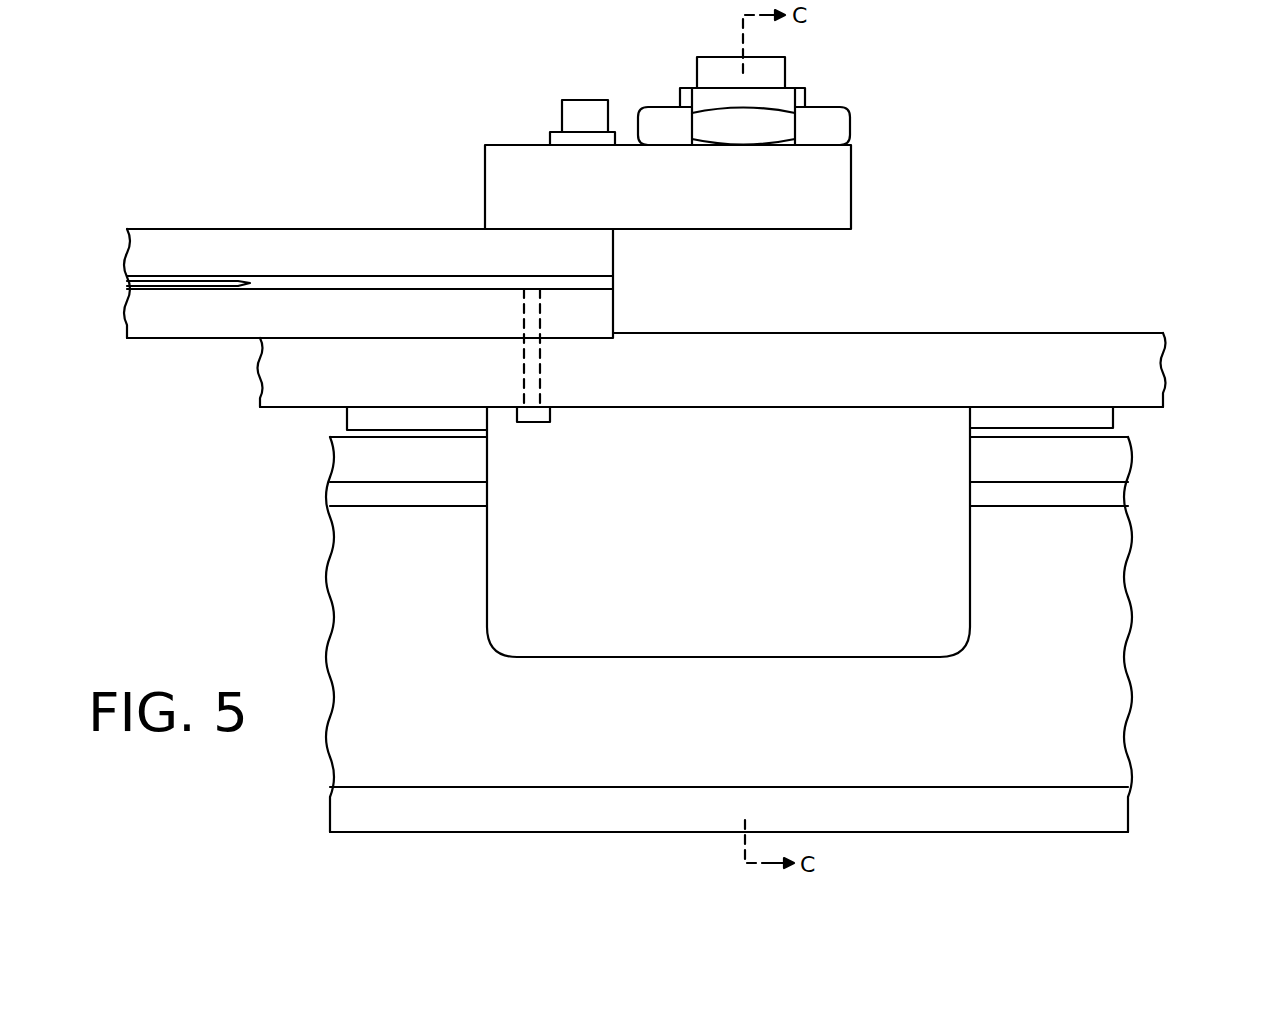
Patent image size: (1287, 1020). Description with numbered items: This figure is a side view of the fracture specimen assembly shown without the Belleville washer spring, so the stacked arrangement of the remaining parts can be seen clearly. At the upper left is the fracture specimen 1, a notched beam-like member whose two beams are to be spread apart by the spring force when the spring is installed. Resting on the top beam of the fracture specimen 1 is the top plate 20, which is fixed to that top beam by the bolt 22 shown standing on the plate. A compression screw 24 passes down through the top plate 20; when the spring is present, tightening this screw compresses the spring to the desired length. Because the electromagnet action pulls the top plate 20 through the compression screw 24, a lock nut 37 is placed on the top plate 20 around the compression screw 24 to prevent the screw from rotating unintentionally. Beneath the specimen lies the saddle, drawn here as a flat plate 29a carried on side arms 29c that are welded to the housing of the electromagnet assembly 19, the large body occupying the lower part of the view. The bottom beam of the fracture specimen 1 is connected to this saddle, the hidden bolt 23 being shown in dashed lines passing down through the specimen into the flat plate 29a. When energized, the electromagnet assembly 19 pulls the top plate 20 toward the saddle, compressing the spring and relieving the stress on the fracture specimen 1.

The fracture specimen 1 is at (289, 218).
The electromagnet assembly 19 is at (1148, 510).
The top plate 20 is at (853, 192).
The bolt 22 is at (580, 98).
The bolt 23 is at (527, 422).
The compression screw 24 is at (788, 82).
The flat plate 29a is at (965, 362).
The side arms 29c is at (940, 432).
The lock nut 37 is at (855, 113).